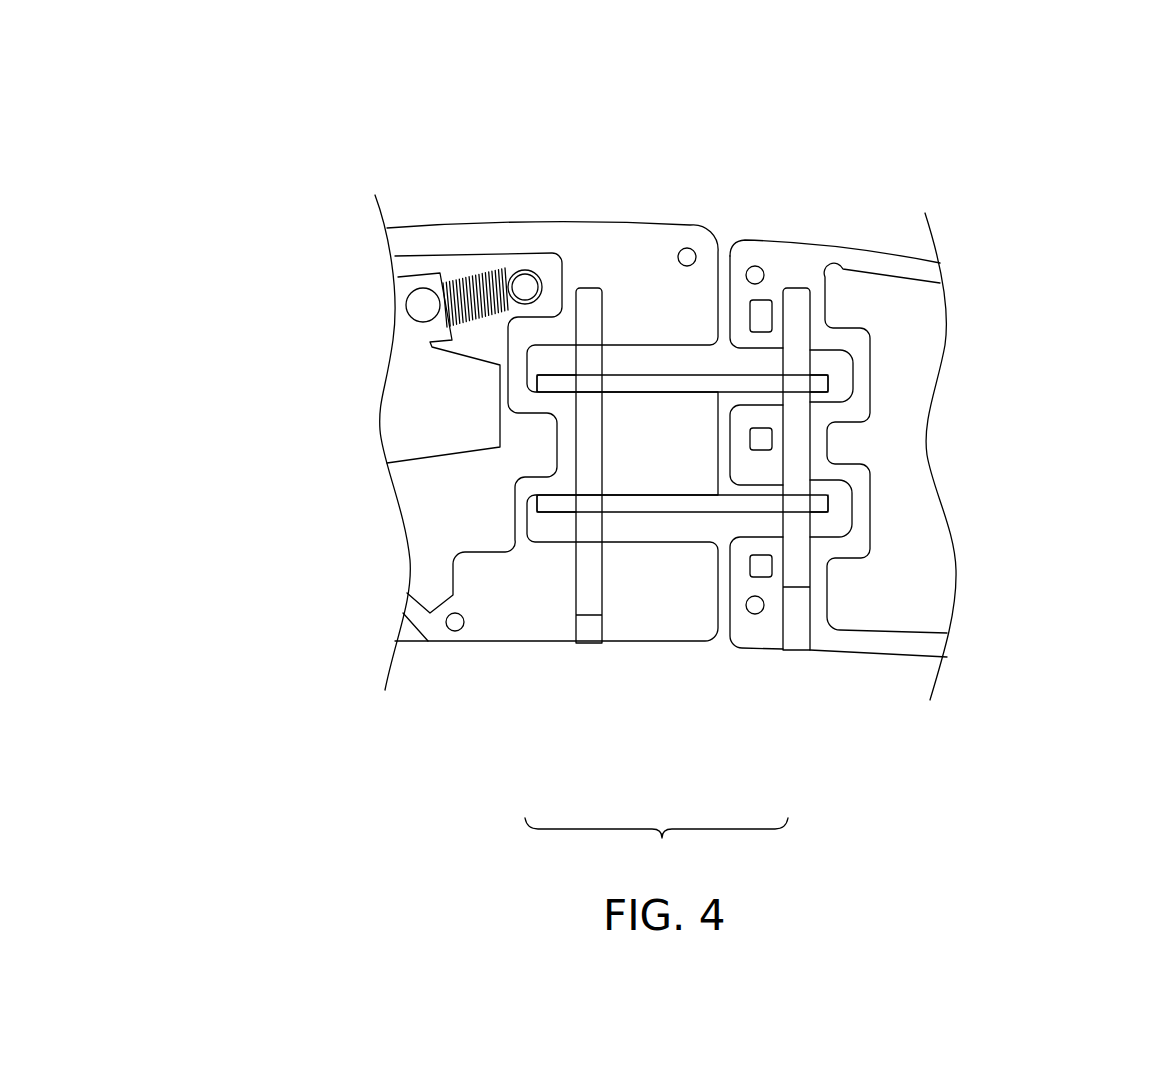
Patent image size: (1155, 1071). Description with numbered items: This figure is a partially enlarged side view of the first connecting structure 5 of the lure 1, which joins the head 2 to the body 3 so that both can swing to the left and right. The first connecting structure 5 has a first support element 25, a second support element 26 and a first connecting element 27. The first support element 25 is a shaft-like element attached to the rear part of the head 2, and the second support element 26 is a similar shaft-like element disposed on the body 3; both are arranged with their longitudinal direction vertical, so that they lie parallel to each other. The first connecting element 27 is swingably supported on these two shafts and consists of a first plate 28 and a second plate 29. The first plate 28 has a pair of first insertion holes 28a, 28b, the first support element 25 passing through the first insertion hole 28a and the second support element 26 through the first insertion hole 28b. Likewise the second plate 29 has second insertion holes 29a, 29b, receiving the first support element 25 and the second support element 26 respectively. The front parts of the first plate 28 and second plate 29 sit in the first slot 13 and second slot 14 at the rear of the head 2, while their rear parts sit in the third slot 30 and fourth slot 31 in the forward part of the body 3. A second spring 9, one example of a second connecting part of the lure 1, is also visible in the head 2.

The lure 1 is at (380, 143).
The head 2 is at (517, 183).
The body 3 is at (882, 197).
The first connecting structure 5 is at (656, 845).
The second spring 9 is at (447, 282).
The first slot 13 is at (500, 438).
The second slot 14 is at (605, 350).
The first support element 25 is at (590, 603).
The second support element 26 is at (797, 573).
The first connecting element 27 is at (663, 540).
The first plate 28 is at (652, 387).
The first insertion hole 28a is at (605, 355).
The first insertion hole 28b is at (770, 385).
The second plate 29 is at (686, 505).
The second insertion hole 29a is at (600, 503).
The second insertion hole 29b is at (783, 502).
The third slot 30 is at (753, 352).
The fourth slot 31 is at (753, 535).